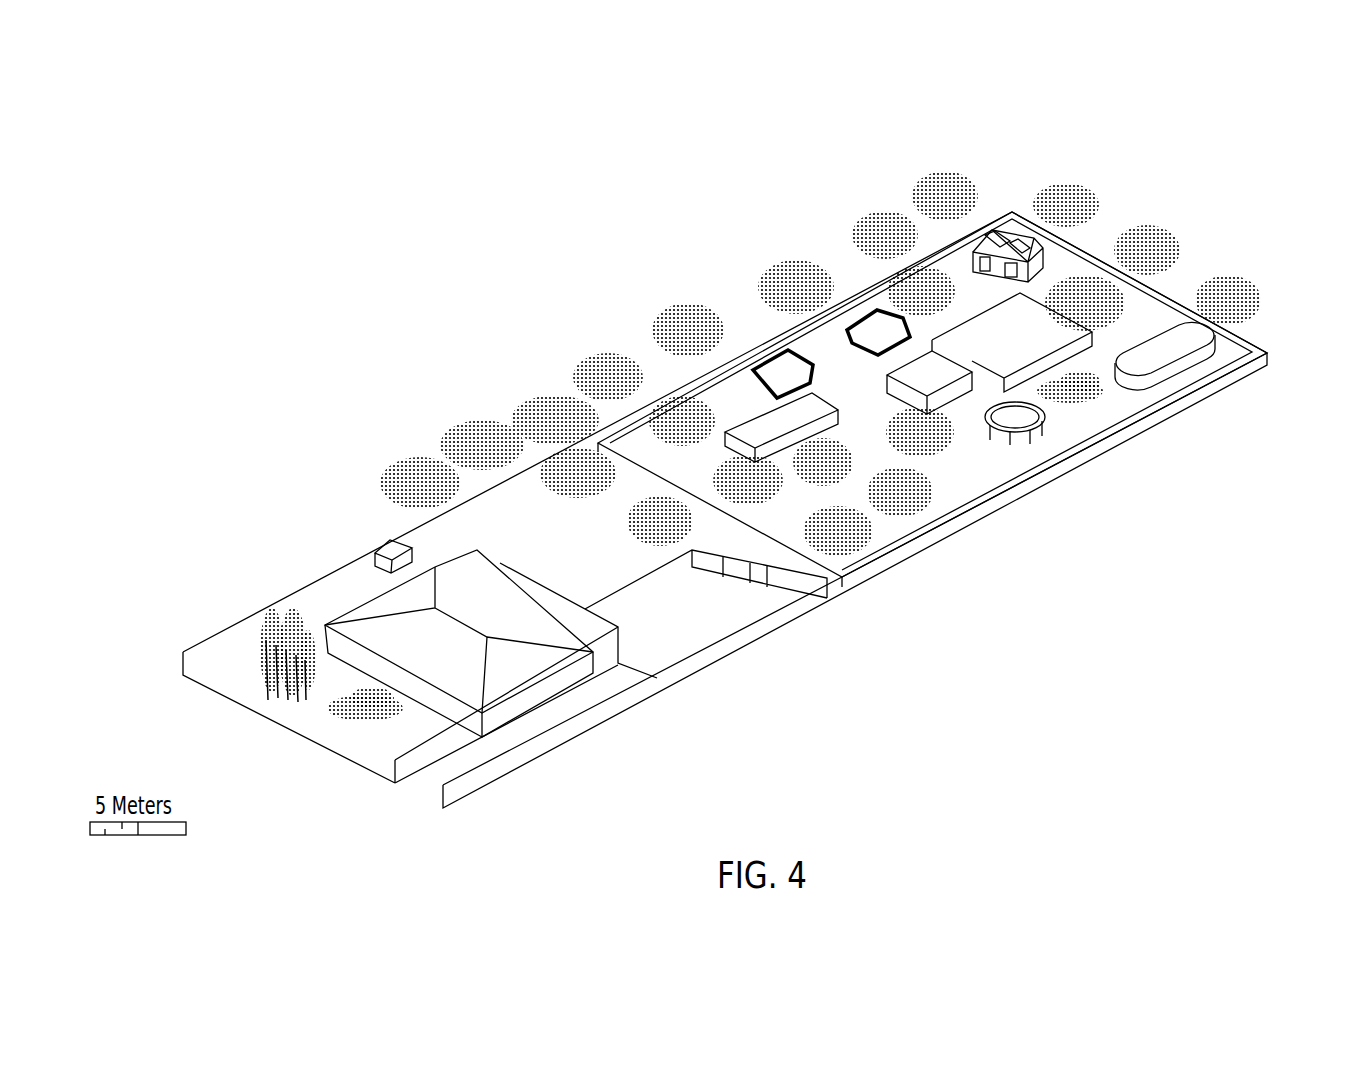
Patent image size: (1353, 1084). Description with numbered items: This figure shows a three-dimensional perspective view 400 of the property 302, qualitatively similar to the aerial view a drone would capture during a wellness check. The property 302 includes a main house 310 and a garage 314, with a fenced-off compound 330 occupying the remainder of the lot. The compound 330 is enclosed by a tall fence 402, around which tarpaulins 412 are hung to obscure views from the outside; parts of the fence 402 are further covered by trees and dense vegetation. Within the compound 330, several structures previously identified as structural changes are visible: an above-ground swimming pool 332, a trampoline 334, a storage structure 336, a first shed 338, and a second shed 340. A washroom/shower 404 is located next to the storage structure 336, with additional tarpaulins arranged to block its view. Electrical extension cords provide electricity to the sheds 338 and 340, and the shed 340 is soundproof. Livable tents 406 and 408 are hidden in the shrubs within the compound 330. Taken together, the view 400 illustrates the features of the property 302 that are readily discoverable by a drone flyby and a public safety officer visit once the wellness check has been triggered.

The three-dimensional perspective view 400 is at (266, 140).
The property 302 is at (380, 250).
The main house 310 is at (378, 616).
The garage 314 is at (793, 582).
The fenced-off compound 330 is at (975, 605).
The above-ground swimming pool 332 is at (1168, 372).
The trampoline 334 is at (1048, 432).
The storage structure 336 is at (1012, 228).
The first shed 338 is at (763, 427).
The second shed 340 is at (670, 395).
The tall fence 402 is at (575, 393).
The washroom/shower 404 is at (955, 405).
The livable tent 406 is at (787, 363).
The livable tent 408 is at (872, 330).
The tarpaulins 412 is at (1237, 372).